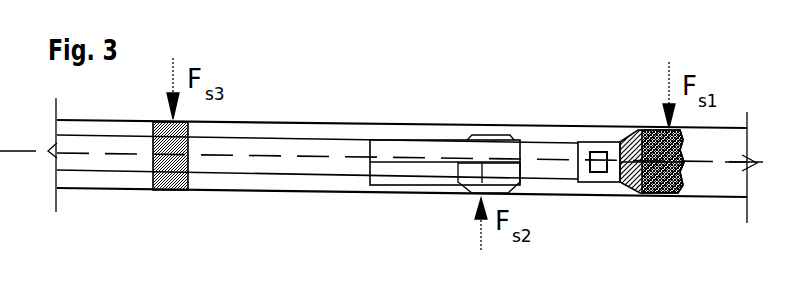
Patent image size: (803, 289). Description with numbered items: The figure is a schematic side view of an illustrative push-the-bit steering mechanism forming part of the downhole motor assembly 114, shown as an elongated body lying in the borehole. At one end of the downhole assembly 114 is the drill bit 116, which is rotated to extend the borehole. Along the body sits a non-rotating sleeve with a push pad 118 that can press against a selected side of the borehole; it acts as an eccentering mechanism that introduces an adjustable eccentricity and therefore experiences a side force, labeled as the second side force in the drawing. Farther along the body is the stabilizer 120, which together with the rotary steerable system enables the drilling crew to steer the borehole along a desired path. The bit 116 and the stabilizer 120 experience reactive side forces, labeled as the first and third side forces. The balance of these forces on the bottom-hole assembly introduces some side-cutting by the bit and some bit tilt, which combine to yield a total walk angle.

The downhole motor assembly 114 is at (653, 112).
The drill bit 116 is at (636, 188).
The push pad 118 is at (457, 183).
The stabilizer 120 is at (172, 189).